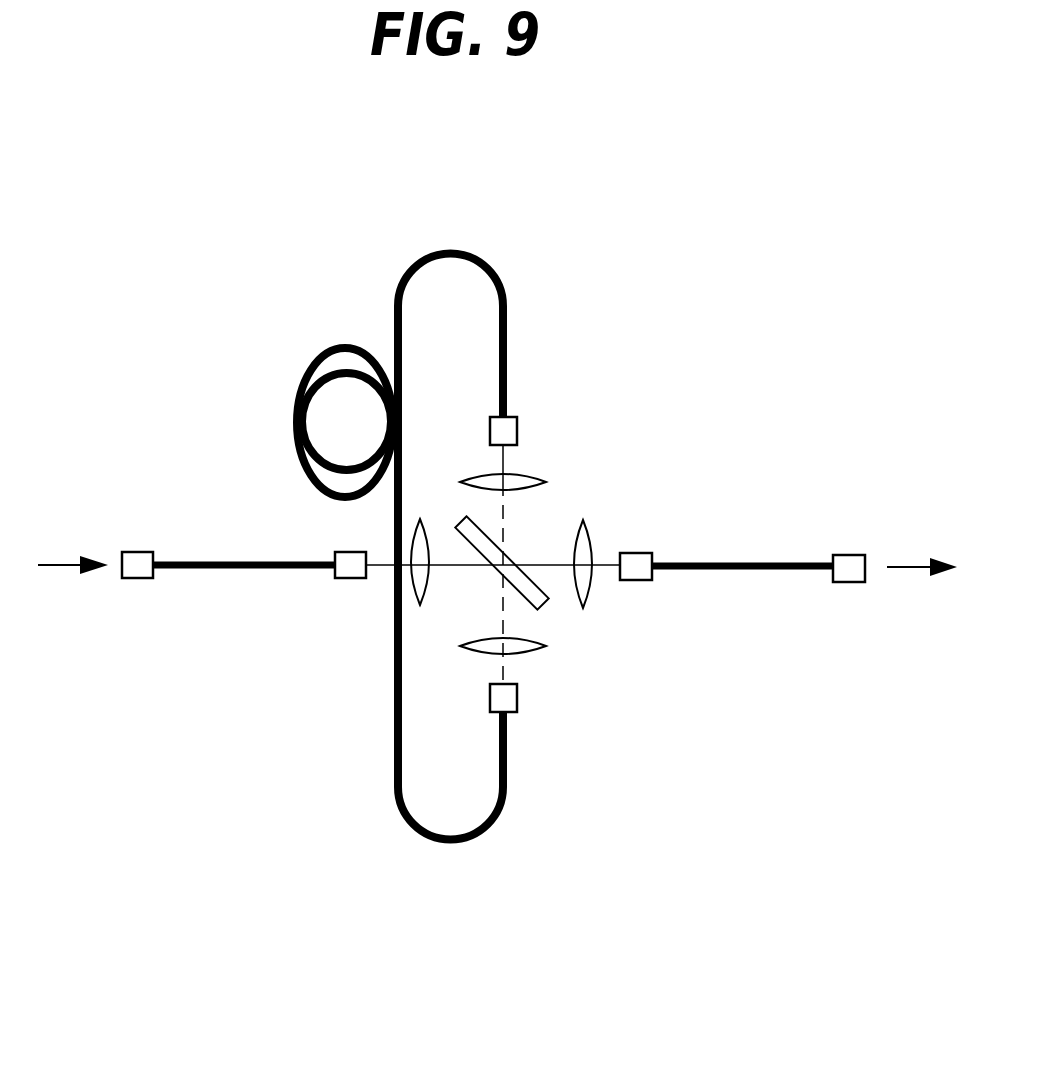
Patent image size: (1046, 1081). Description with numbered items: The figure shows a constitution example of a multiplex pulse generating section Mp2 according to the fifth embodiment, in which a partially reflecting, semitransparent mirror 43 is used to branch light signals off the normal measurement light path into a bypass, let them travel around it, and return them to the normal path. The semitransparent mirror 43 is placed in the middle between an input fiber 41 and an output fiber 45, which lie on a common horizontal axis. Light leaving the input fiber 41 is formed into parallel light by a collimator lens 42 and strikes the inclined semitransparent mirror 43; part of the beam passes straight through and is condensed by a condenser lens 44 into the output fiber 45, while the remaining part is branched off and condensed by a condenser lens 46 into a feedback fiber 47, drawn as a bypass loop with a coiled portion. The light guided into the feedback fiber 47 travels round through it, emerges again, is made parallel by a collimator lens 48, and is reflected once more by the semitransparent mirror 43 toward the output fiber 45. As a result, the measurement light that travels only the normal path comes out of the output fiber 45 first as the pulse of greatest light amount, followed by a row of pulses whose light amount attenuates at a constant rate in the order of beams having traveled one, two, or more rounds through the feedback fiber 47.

The multiplex pulse generating section Mp2 is at (257, 300).
The input fiber 41 is at (222, 562).
The collimator lens 42 is at (412, 583).
The semitransparent mirror 43 is at (547, 604).
The condenser lens 44 is at (586, 518).
The output fiber 45 is at (722, 565).
The condenser lens 46 is at (517, 652).
The feedback fiber 47 is at (507, 310).
The collimator lens 48 is at (539, 479).